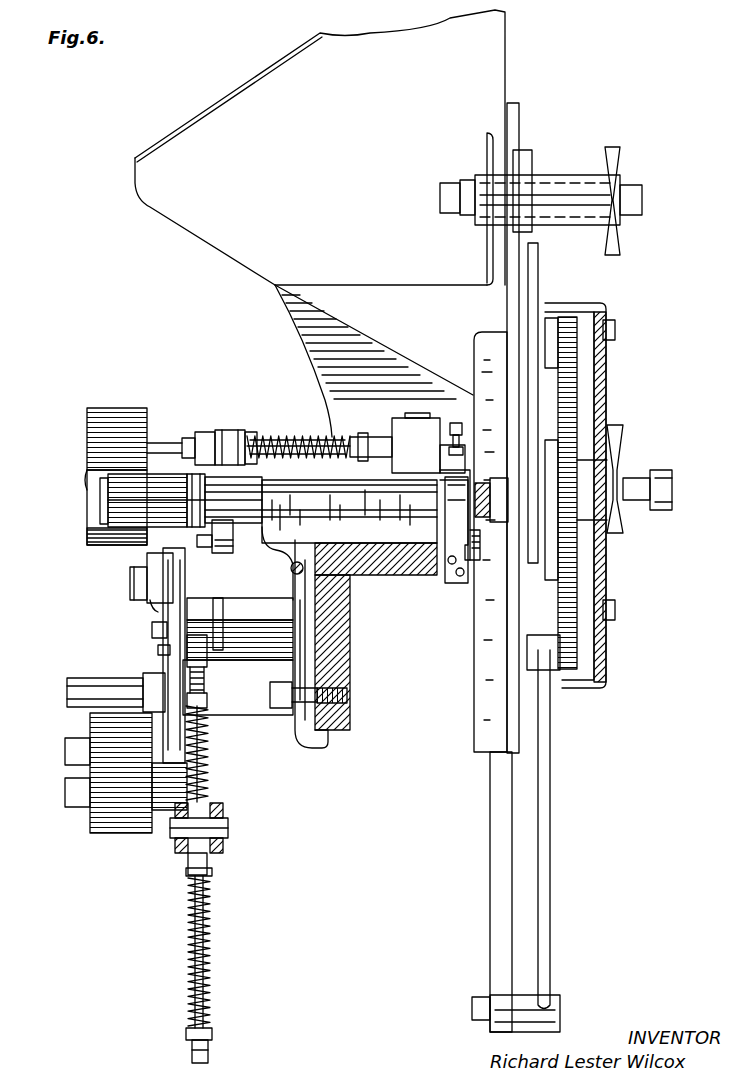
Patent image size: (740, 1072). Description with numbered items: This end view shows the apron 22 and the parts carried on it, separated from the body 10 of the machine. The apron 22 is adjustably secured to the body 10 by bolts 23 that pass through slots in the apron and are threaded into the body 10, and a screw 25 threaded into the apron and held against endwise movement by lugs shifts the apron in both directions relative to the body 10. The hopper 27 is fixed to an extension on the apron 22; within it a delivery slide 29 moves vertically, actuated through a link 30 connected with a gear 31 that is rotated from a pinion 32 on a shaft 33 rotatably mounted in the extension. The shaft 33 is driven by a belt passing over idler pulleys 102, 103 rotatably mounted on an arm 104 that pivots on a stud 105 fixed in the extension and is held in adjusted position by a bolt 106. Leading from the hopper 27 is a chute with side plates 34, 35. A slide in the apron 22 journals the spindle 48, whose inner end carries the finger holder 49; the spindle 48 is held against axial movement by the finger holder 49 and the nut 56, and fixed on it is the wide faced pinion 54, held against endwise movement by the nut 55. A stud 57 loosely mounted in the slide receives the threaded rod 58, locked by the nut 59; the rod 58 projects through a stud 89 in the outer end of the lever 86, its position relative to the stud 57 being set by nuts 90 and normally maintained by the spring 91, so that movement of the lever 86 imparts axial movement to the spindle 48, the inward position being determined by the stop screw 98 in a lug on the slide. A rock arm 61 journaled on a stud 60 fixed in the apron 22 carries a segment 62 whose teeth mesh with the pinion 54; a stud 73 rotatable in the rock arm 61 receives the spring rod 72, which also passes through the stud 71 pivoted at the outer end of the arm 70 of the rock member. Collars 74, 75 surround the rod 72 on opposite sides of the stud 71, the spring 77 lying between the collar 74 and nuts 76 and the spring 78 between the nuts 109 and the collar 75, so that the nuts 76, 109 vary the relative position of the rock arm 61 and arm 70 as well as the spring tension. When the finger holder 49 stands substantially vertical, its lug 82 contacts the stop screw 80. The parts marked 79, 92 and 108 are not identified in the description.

The body 10 is at (332, 632).
The apron 22 is at (287, 585).
The bolts 23 is at (347, 696).
The screw 25 is at (303, 568).
The hopper 27 is at (320, 223).
The delivery slide 29 is at (490, 872).
The link 30 is at (551, 766).
The gear 31 is at (575, 303).
The pinion 32 is at (595, 470).
The shaft 33 is at (86, 479).
The side plate 34 is at (509, 300).
The side plate 35 is at (538, 278).
The spindle 48 is at (500, 492).
The finger holder 49 is at (445, 560).
The wide faced pinion 54 is at (100, 515).
The nut 55 is at (108, 501).
The nut 56 is at (196, 474).
The stud 57 is at (432, 408).
The rod 58 is at (300, 436).
The nut 59 is at (402, 420).
The stud 60 is at (152, 630).
The rock arm 61 is at (158, 650).
The segment 62 is at (147, 548).
The arm 70 is at (223, 845).
The stud 71 is at (228, 830).
The spring rod 72 is at (212, 917).
The stud 73 is at (225, 602).
The collar 74 is at (207, 862).
The collar 75 is at (223, 810).
The nuts 76 is at (212, 1040).
The spring 77 is at (211, 945).
The spring 78 is at (210, 735).
The screw housing 79 is at (207, 668).
The stop screw 80 is at (456, 423).
The lug 82 is at (445, 492).
The lever 86 is at (252, 432).
The stud 89 is at (234, 437).
The nuts 90 is at (207, 429).
The spring 91 is at (280, 440).
The collar 92 is at (368, 433).
The stop screw 98 is at (233, 545).
The idler pulley 102 is at (120, 833).
The idler pulley 103 is at (108, 773).
The arm 104 is at (148, 603).
The stud 105 is at (130, 583).
The bolt 106 is at (67, 692).
The gear 108 is at (88, 441).
The nuts 109 is at (207, 702).